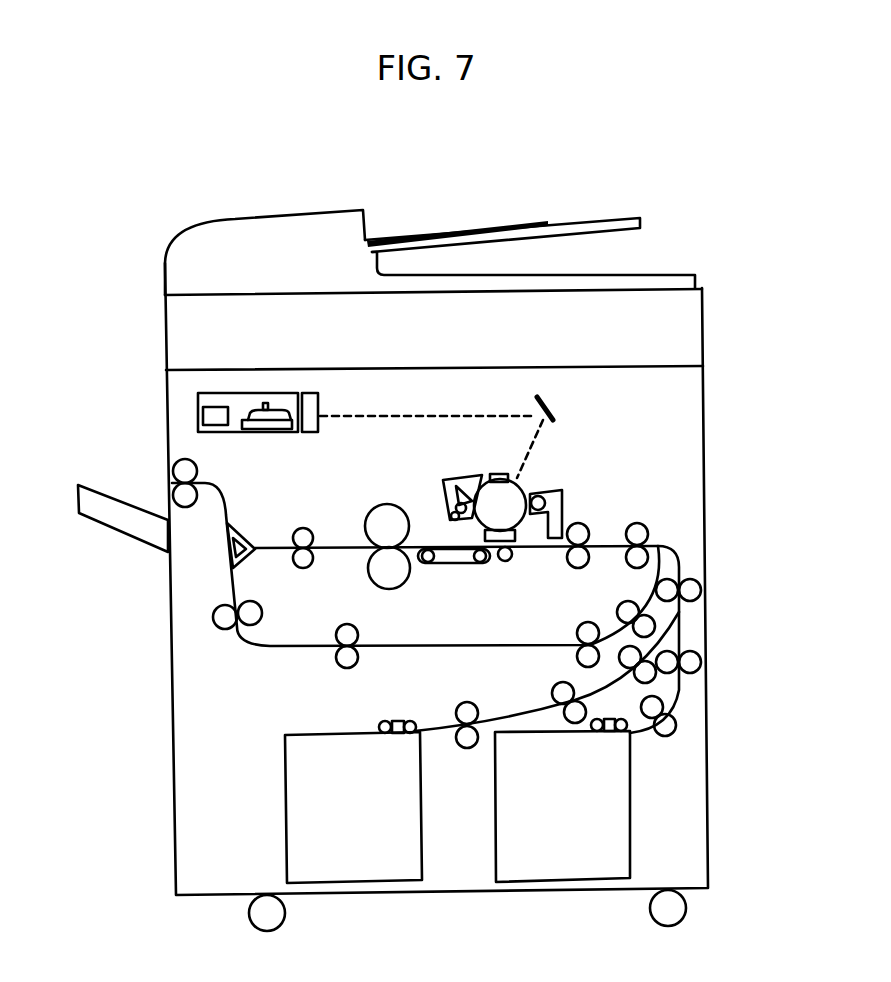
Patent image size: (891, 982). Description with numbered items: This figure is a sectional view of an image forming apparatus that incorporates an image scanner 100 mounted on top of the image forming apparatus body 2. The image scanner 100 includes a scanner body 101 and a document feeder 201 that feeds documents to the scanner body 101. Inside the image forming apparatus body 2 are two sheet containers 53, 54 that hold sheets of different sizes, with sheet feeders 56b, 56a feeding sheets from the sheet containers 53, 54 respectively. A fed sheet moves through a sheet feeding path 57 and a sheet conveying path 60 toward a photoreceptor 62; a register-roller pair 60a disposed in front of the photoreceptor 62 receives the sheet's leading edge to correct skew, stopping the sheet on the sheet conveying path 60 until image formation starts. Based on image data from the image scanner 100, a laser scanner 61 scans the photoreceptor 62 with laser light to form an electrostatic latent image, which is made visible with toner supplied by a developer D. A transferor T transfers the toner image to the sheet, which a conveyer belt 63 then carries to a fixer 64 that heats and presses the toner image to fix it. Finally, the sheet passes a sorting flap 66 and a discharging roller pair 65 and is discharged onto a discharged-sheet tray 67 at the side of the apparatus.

The image forming apparatus body 2 is at (706, 490).
The image scanner 100 is at (706, 289).
The scanner body 101 is at (706, 330).
The document feeder 201 is at (344, 209).
The laser scanner 61 is at (296, 432).
The photoreceptor 62 is at (530, 485).
The developer D is at (556, 496).
The conveyer belt 63 is at (445, 568).
The fixer 64 is at (374, 551).
The transferor T is at (501, 563).
The sheet conveying path 60 is at (605, 543).
The register-roller pair 60a is at (567, 548).
The sheet feeding path 57 is at (678, 620).
The sheet feeder 56a is at (600, 716).
The sheet feeder 56b is at (398, 718).
The sheet container 53 is at (285, 793).
The sheet container 54 is at (495, 793).
The discharging roller pair 65 is at (193, 508).
The sorting flap 66 is at (235, 540).
The discharged-sheet tray 67 is at (110, 522).